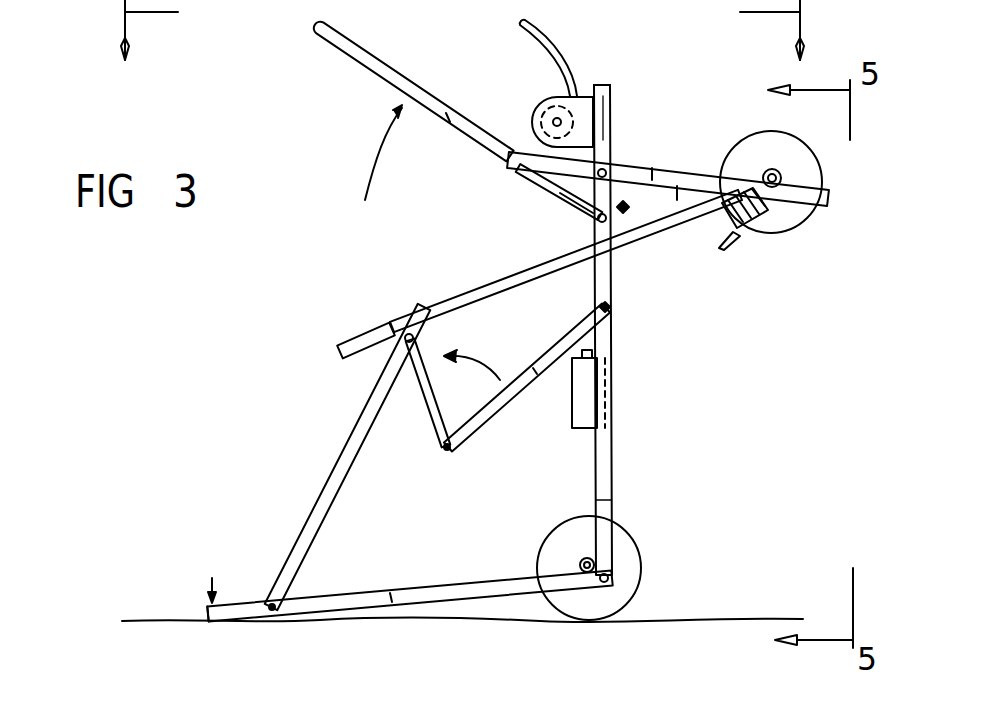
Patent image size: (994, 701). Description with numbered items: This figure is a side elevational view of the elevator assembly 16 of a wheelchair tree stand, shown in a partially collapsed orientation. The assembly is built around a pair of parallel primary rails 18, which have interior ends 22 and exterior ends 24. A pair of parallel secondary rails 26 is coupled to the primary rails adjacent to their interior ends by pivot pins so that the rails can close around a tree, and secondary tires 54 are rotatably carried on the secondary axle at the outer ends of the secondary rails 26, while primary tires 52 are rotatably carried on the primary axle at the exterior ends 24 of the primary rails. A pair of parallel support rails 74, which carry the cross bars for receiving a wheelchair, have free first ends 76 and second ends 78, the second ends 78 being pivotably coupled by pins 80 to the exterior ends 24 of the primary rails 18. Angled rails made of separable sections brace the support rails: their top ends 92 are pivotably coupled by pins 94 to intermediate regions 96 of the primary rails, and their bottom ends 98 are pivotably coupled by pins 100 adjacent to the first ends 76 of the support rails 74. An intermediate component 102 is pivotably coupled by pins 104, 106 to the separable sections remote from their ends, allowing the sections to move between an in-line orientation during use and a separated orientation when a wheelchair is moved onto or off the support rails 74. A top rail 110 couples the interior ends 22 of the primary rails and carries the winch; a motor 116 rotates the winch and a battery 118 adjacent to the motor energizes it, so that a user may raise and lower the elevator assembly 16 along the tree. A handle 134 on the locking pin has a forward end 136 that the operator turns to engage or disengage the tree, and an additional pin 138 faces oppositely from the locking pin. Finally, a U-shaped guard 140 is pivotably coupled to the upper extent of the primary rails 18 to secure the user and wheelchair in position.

The elevator assembly 16 is at (614, 90).
The primary rails 18 is at (612, 449).
The interior ends of primary rails 22 is at (612, 119).
The exterior ends of primary rails 24 is at (613, 507).
The secondary rails 26 is at (668, 166).
The primary tires 52 is at (630, 557).
The secondary tires 54 is at (802, 168).
The support rails 74 is at (450, 583).
The first ends of support rails 76 is at (208, 612).
The second ends of support rails 78 is at (567, 580).
The pins 80 is at (614, 580).
The top ends of separable sections 92 is at (579, 330).
The pins 94 is at (612, 310).
The intermediate regions of primary rails 96 is at (611, 343).
The bottom ends of separable sections 98 is at (305, 548).
The pins 100 is at (270, 603).
The intermediate component 102 is at (422, 405).
The pin 104 is at (438, 454).
The pin 106 is at (417, 339).
The top rail 110 is at (612, 96).
The motor 116 is at (538, 115).
The battery 118 is at (583, 403).
The handle 134 is at (345, 333).
The forward end of handle 136 is at (485, 282).
The additional pin 138 is at (628, 207).
The U-shaped guard 140 is at (450, 118).